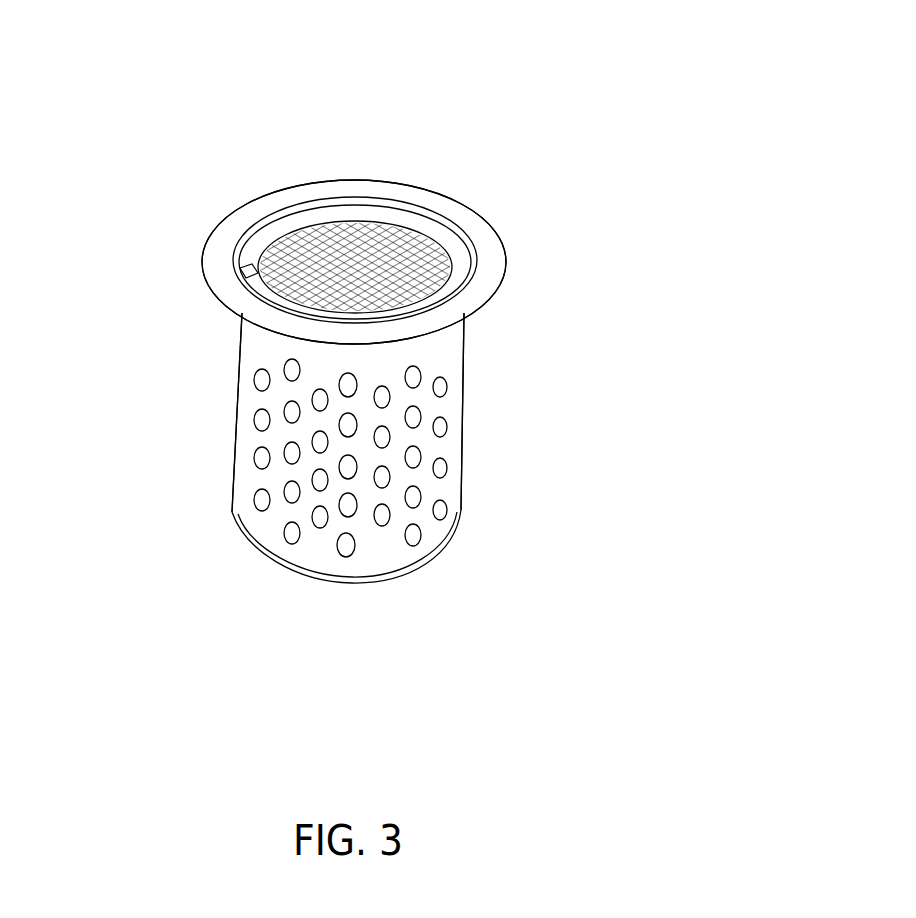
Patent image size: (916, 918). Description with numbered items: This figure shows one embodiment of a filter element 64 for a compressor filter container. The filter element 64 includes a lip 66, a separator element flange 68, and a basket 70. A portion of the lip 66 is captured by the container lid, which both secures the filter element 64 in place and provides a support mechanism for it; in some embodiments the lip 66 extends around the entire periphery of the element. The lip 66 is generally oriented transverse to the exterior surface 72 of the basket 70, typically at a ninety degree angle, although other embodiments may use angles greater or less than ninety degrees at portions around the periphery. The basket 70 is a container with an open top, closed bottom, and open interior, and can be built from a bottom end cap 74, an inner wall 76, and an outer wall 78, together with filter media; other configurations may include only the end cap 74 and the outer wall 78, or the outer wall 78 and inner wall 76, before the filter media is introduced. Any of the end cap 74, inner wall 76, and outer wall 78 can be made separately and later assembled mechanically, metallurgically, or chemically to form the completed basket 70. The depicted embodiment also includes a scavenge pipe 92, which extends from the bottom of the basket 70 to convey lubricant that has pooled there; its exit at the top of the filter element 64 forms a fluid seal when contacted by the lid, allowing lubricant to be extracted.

The filter element 64 is at (727, 121).
The lip 66 is at (230, 228).
The separator element flange 68 is at (392, 208).
The basket 70 is at (567, 421).
The exterior surface 72 is at (438, 532).
The bottom end cap 74 is at (237, 537).
The inner wall 76 is at (295, 258).
The outer wall 78 is at (280, 397).
The scavenge pipe 92 is at (245, 272).